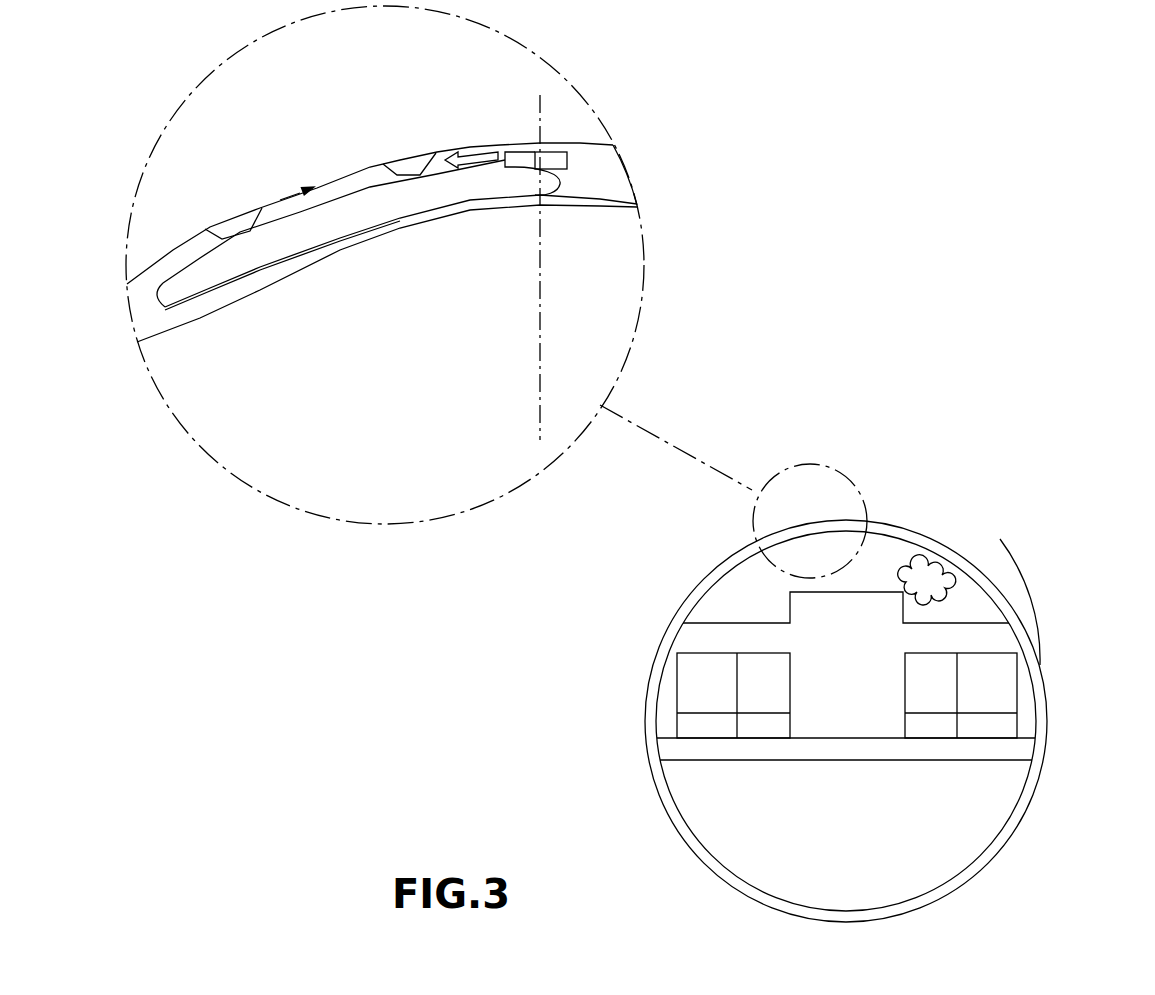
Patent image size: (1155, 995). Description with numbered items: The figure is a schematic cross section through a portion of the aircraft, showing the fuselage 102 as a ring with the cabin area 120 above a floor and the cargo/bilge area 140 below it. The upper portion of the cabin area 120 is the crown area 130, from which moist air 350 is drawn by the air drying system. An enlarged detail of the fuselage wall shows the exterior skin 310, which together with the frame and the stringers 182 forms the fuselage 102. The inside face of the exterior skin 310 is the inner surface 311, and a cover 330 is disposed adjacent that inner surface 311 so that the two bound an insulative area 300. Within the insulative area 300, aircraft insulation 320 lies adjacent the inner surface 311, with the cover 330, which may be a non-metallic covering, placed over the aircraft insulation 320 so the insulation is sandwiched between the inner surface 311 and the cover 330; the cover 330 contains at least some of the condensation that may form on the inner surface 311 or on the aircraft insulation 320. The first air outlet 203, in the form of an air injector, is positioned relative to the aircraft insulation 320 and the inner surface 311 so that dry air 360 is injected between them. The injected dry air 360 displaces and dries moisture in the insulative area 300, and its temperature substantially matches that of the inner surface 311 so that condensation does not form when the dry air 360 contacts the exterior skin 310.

The fuselage 102 is at (1037, 783).
The cabin area 120 is at (1012, 635).
The crown area 130 is at (896, 539).
The cargo/bilge area 140 is at (978, 842).
The stringer 182 is at (205, 232).
The first air outlet 203 is at (556, 162).
The insulative area 300 is at (136, 318).
The exterior skin 310 is at (360, 170).
The inner surface 311 is at (303, 191).
The aircraft insulation 320 is at (356, 212).
The cover 330 is at (583, 201).
The moist air 350 is at (930, 577).
The dry air 360 is at (477, 150).